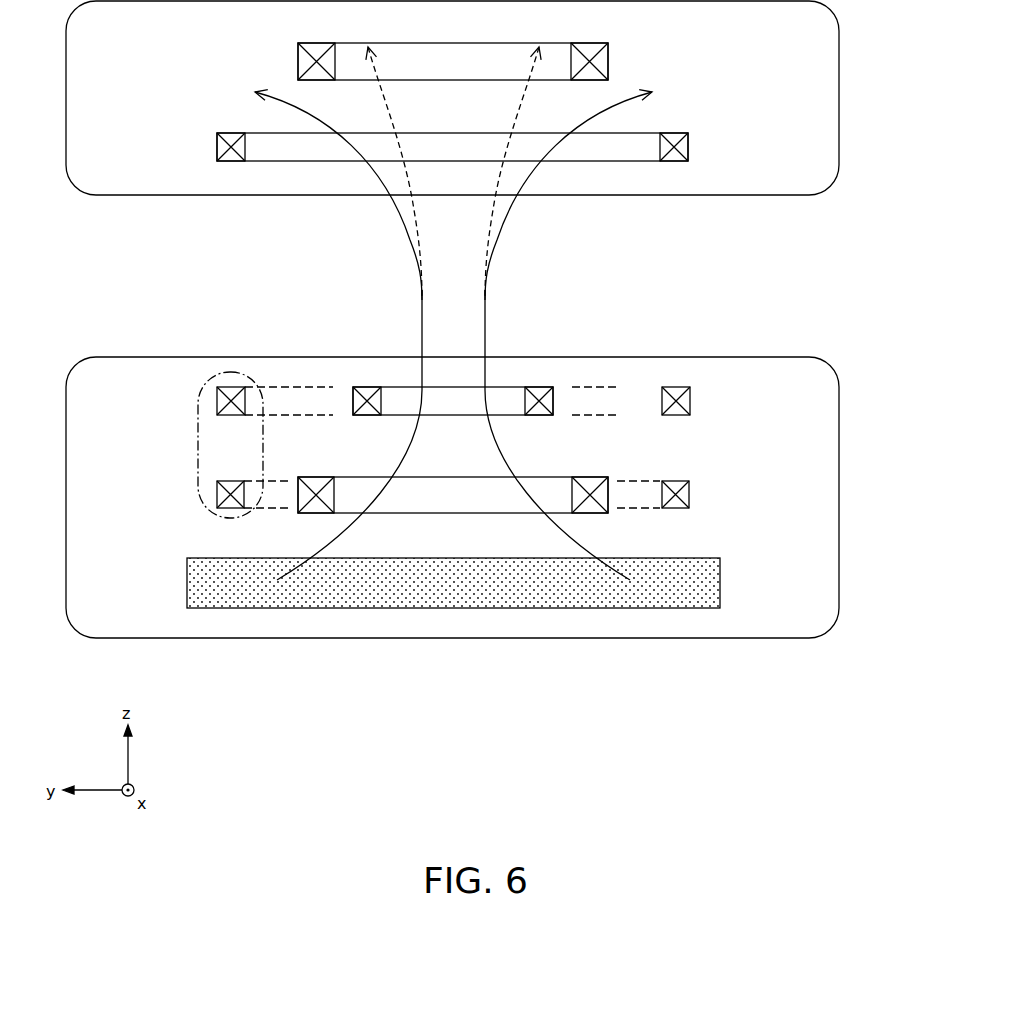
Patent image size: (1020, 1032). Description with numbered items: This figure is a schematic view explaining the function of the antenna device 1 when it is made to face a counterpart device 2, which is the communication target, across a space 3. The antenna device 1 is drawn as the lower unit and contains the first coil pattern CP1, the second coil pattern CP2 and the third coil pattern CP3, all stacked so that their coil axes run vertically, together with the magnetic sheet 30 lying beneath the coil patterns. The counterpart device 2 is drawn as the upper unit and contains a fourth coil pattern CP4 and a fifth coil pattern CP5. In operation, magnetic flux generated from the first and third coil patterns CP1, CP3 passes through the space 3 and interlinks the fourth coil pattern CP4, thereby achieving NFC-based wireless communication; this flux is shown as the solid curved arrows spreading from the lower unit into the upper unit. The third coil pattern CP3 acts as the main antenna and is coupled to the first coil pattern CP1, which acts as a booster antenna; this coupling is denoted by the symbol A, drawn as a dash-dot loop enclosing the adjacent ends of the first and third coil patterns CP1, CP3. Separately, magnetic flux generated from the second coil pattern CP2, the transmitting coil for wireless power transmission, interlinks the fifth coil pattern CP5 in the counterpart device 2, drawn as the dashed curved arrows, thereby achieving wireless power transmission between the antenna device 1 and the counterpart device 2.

The antenna device 1 is at (840, 497).
The counterpart device 2 is at (840, 88).
The space 3 is at (467, 287).
The magnetic sheet 30 is at (707, 585).
The coupling A is at (198, 455).
The first coil pattern CP1 is at (688, 401).
The second coil pattern CP2 is at (590, 508).
The third coil pattern CP3 is at (688, 495).
The fourth coil pattern CP4 is at (686, 147).
The fifth coil pattern CP5 is at (606, 62).